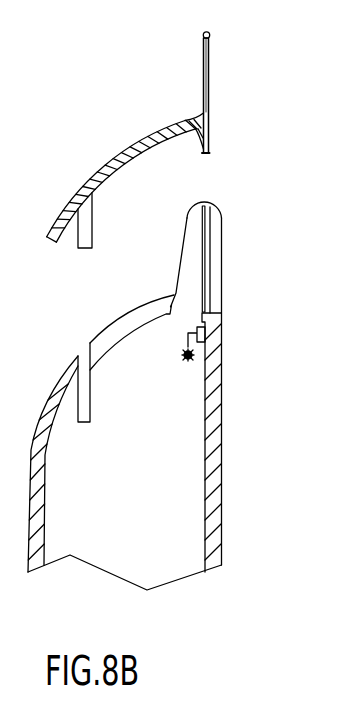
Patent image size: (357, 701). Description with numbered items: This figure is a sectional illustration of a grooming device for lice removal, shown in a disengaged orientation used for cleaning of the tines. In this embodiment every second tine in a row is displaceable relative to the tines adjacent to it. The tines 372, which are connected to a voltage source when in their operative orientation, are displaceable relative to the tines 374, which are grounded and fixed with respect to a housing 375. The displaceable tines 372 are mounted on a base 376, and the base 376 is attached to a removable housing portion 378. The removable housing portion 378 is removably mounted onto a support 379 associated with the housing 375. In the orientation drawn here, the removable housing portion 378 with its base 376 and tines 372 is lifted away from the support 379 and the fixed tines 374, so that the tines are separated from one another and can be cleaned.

The tines 372 is at (208, 70).
The tines 374 is at (205, 253).
The housing 375 is at (216, 380).
The base 376 is at (208, 128).
The removable housing portion 378 is at (137, 138).
The support 379 is at (90, 398).